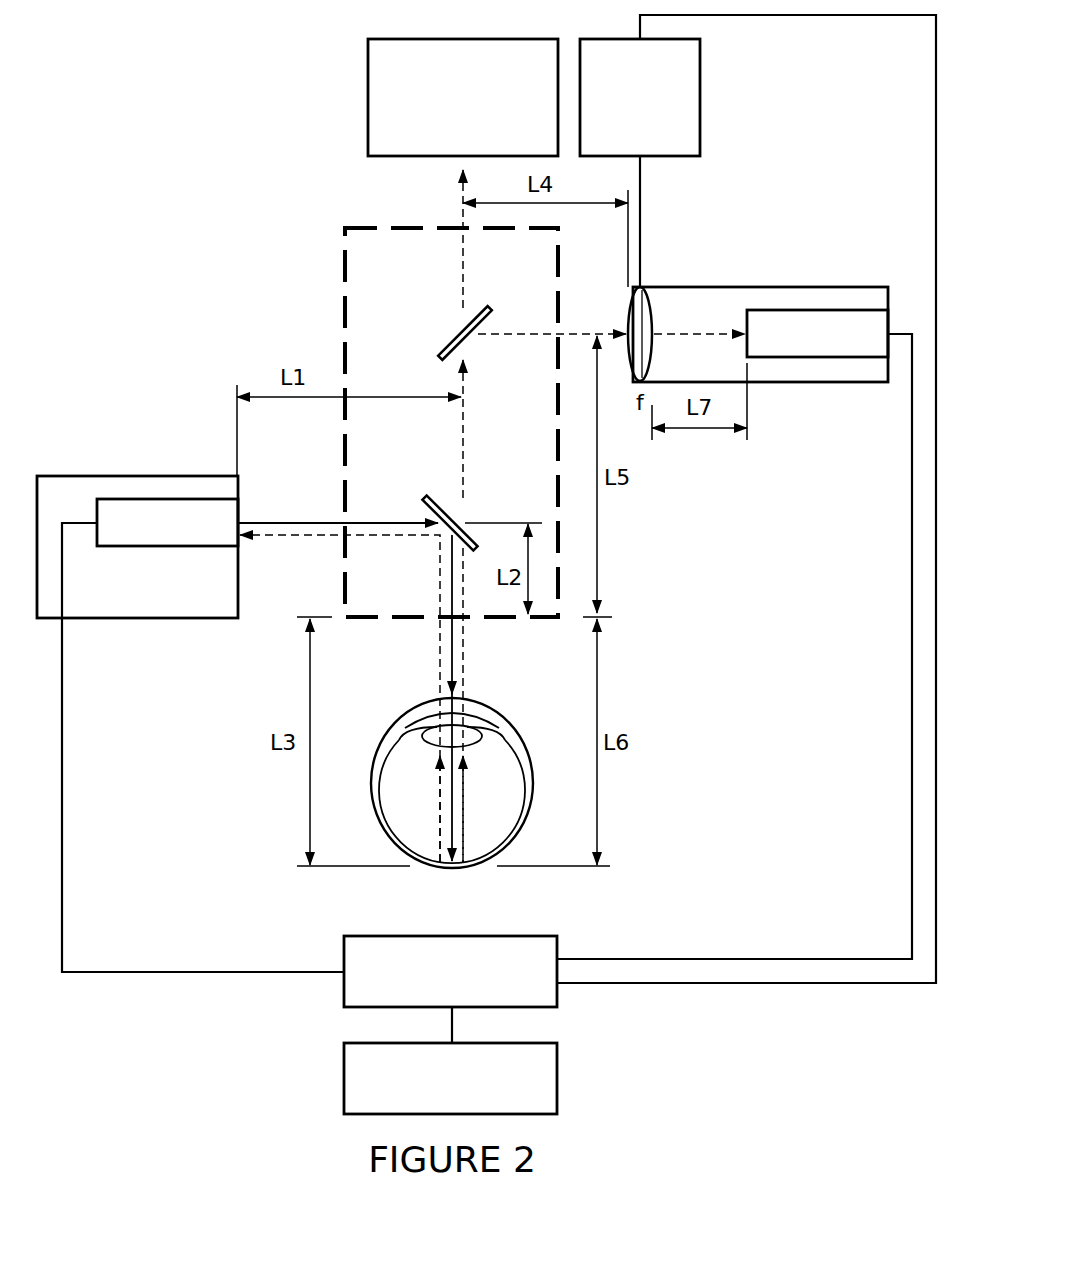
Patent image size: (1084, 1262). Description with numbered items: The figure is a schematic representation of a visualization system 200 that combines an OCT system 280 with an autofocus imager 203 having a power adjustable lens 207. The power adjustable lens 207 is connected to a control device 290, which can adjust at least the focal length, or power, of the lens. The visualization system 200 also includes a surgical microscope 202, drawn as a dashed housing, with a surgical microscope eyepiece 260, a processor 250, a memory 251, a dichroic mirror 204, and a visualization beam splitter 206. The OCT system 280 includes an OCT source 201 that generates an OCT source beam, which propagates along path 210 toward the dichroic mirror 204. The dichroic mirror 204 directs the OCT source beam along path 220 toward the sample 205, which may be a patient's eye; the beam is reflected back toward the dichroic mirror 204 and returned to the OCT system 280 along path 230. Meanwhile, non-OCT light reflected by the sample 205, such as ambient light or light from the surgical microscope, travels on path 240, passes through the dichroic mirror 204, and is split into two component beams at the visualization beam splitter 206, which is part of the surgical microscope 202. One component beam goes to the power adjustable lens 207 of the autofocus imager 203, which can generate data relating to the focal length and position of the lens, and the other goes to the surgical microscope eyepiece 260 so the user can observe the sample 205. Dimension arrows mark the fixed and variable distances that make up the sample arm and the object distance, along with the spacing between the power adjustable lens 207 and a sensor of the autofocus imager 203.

The visualization system 200 is at (122, 110).
The OCT source 201 is at (165, 548).
The surgical microscope 202 is at (338, 308).
The autofocus imager 203 is at (817, 285).
The dichroic mirror 204 is at (432, 497).
The sample 205 is at (428, 870).
The visualization beam splitter 206 is at (443, 350).
The power adjustable lens 207 is at (654, 322).
The path 210 is at (290, 520).
The path 220 is at (456, 668).
The path 230 is at (290, 540).
The path 240 is at (466, 385).
The processor 250 is at (344, 995).
The memory 251 is at (344, 1076).
The surgical microscope eyepiece 260 is at (368, 98).
The OCT system 280 is at (118, 476).
The control device 290 is at (700, 98).